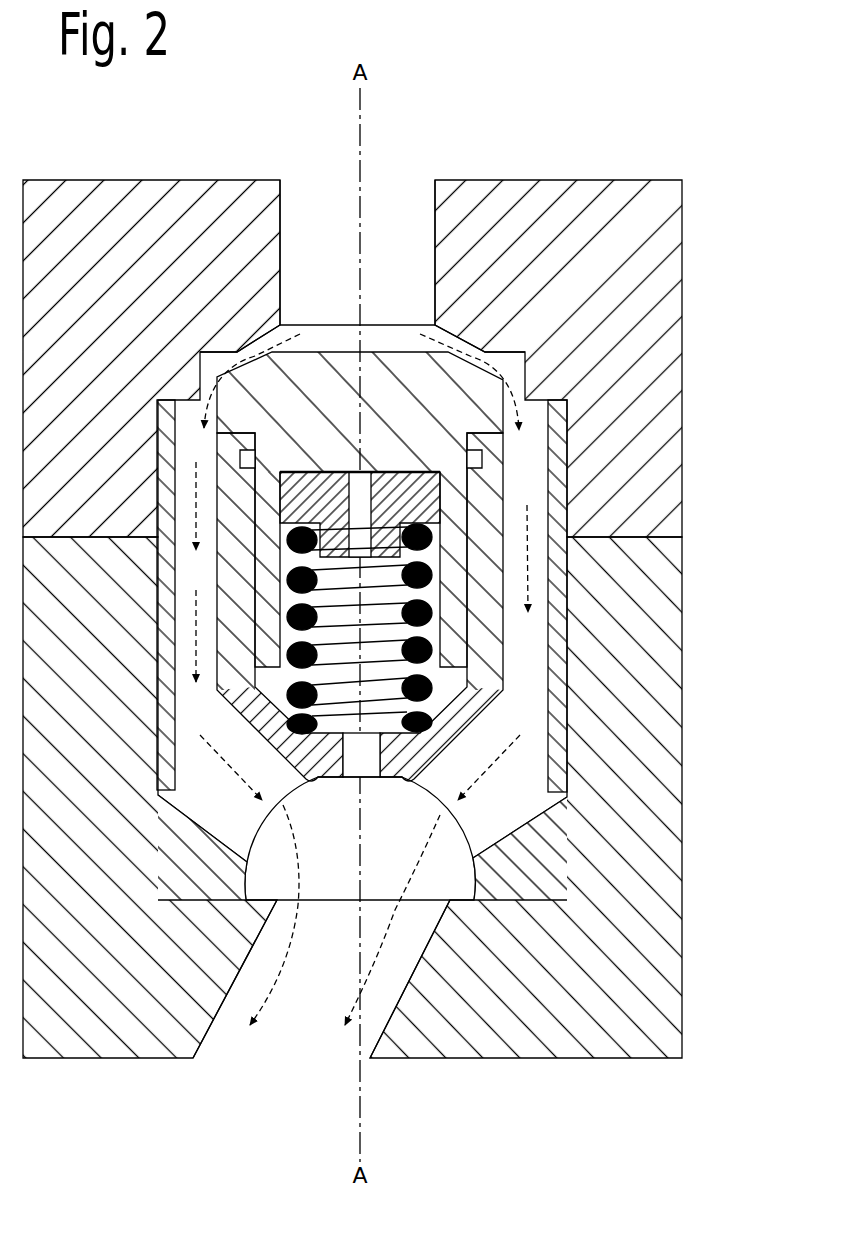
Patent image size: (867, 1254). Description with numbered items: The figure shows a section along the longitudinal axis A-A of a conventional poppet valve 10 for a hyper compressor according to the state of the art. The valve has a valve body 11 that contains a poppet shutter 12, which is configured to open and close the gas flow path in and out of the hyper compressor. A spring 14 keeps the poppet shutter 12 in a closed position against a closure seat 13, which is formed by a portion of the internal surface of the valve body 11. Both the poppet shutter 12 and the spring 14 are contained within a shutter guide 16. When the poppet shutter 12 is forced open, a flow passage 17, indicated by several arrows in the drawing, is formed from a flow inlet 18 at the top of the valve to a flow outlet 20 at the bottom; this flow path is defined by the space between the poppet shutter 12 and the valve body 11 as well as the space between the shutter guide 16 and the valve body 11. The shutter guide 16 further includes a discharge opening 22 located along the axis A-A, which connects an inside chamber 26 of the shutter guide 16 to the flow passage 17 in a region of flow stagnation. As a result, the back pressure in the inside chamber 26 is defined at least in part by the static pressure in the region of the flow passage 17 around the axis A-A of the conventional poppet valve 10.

The conventional poppet valve 10 is at (710, 194).
The valve body 11 is at (670, 632).
The poppet shutter 12 is at (333, 367).
The closure seat 13 is at (426, 336).
The spring 14 is at (233, 709).
The shutter guide 16 is at (232, 581).
The flow passage 17 is at (530, 498).
The flow inlet 18 is at (384, 214).
The flow outlet 20 is at (298, 1040).
The discharge opening 22 is at (356, 780).
The inside chamber 26 is at (445, 688).